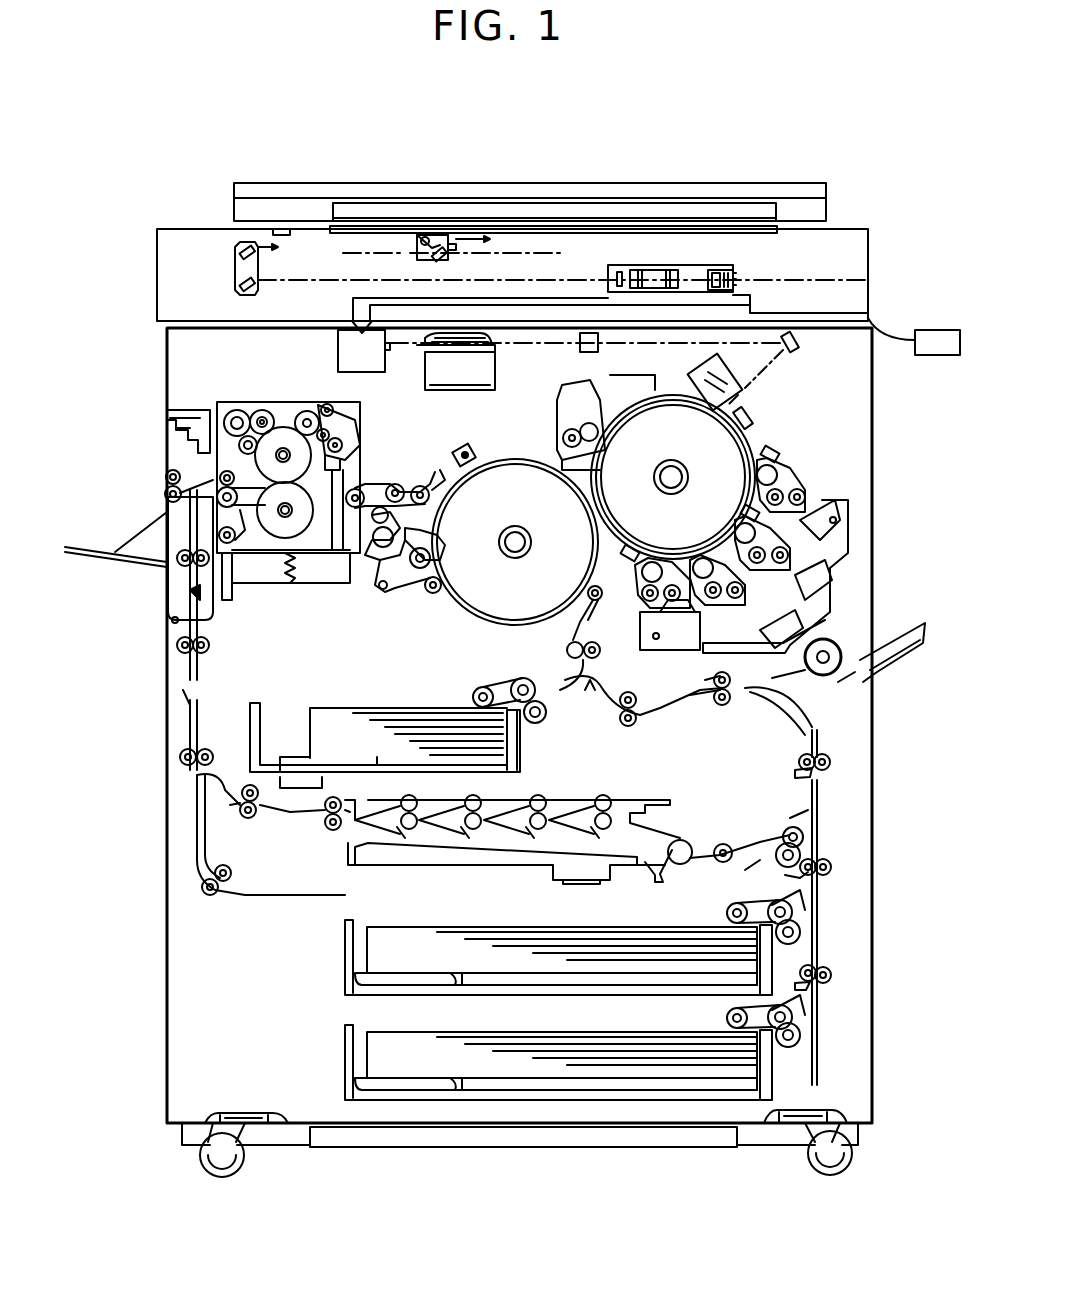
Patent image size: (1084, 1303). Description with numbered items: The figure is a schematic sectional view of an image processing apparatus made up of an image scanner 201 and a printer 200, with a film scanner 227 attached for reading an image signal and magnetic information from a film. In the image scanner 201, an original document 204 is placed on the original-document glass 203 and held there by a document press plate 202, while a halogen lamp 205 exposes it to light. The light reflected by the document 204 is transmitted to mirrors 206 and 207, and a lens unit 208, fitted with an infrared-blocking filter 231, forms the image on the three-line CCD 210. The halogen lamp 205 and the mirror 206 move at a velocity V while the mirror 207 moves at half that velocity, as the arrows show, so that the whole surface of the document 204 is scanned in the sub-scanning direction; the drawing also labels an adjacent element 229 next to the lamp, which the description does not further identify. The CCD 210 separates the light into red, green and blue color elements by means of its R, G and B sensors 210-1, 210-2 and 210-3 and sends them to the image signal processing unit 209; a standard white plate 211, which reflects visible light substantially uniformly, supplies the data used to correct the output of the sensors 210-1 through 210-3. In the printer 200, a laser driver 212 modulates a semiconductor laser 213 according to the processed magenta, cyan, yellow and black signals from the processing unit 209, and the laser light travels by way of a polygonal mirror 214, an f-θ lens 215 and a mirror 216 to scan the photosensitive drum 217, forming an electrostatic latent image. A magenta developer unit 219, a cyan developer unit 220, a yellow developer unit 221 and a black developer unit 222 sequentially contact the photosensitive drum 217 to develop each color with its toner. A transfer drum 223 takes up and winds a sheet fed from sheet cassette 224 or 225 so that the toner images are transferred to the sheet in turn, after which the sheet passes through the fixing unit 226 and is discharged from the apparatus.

The printer 200 is at (850, 581).
The image scanner 201 is at (846, 229).
The document press plate 202 is at (655, 188).
The original-document glass 203 is at (762, 226).
The original document 204 is at (550, 226).
The halogen lamp 205 is at (425, 238).
The mirror 206 is at (440, 260).
The mirror 207 is at (236, 290).
The lens unit 208 is at (633, 272).
The image signal processing unit 209 is at (750, 303).
The three-line sensor (CCD) 210 is at (718, 270).
The R sensor 210-1 is at (736, 273).
The G sensor 210-2 is at (736, 279).
The B sensor 210-3 is at (736, 285).
The standard white plate 211 is at (281, 229).
The laser driver 212 is at (338, 350).
The semiconductor laser 213 is at (392, 346).
The polygonal mirror 214 is at (500, 350).
The f-θ lens 215 is at (598, 350).
The mirror 216 is at (797, 350).
The photosensitive drum 217 is at (748, 440).
The magenta developer unit 219 is at (697, 553).
The cyan developer unit 220 is at (748, 532).
The yellow developer unit 221 is at (757, 477).
The black developer unit 222 is at (645, 656).
The transfer drum 223 is at (483, 608).
The sheet cassette 224 is at (520, 763).
The sheet cassette 225 is at (775, 1068).
The fixing unit 226 is at (288, 583).
The film scanner 227 is at (945, 356).
The second mirror unit 229 is at (453, 240).
The infrared-blocking filter 231 is at (608, 272).